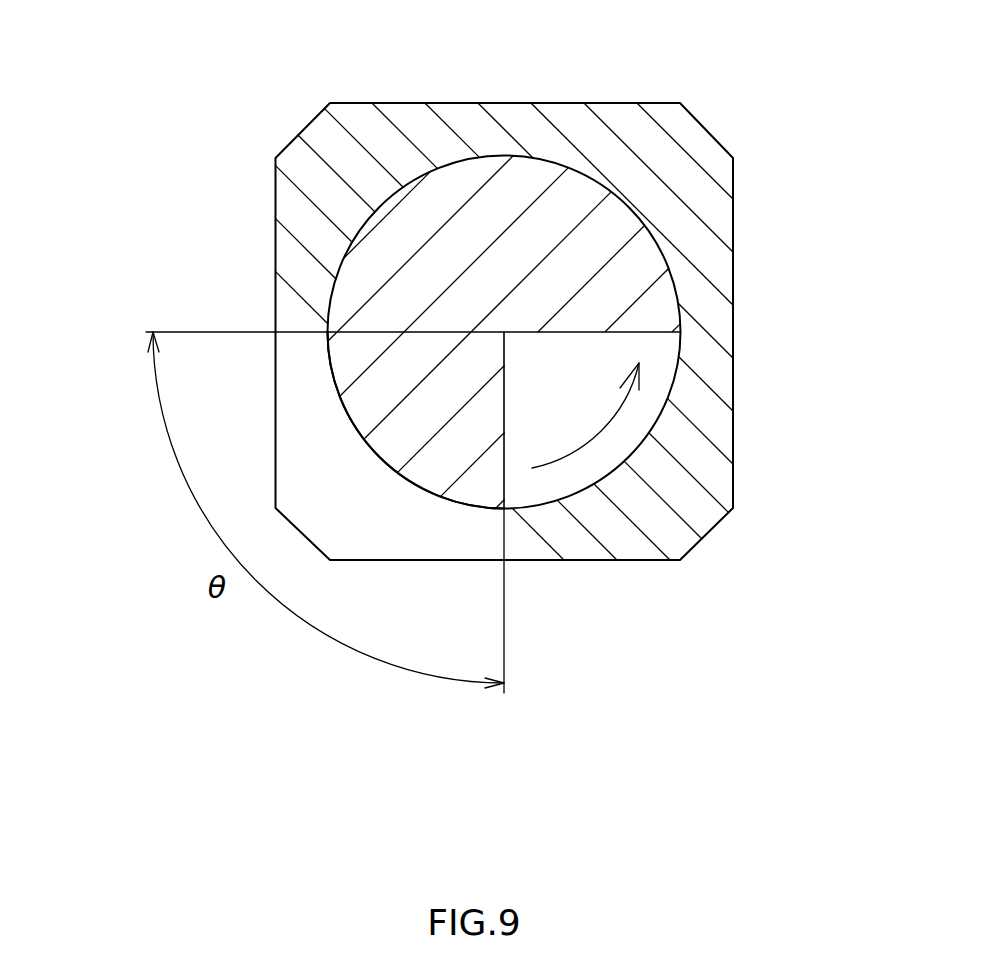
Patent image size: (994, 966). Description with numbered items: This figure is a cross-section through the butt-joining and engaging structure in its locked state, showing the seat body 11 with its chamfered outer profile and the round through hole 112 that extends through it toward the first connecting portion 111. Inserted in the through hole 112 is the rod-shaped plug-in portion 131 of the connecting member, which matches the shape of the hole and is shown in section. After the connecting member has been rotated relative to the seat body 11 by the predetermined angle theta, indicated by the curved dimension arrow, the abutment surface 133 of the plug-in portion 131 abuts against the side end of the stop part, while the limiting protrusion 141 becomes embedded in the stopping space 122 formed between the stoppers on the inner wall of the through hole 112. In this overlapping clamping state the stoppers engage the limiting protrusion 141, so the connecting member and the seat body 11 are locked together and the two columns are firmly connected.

The seat body 11 is at (740, 428).
The first connecting portion 111 is at (335, 143).
The through hole 112 is at (462, 160).
The plug-in portion 131 is at (627, 272).
The abutment surface 133 is at (423, 333).
The stopping space 122 is at (300, 445).
The limiting protrusion 141 is at (443, 465).